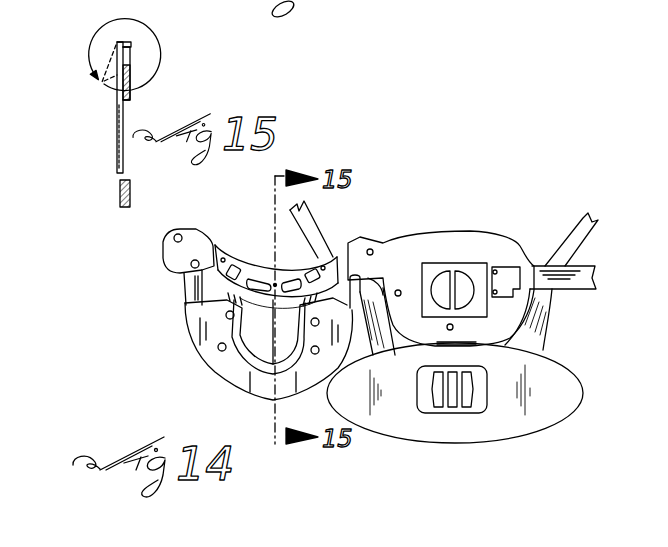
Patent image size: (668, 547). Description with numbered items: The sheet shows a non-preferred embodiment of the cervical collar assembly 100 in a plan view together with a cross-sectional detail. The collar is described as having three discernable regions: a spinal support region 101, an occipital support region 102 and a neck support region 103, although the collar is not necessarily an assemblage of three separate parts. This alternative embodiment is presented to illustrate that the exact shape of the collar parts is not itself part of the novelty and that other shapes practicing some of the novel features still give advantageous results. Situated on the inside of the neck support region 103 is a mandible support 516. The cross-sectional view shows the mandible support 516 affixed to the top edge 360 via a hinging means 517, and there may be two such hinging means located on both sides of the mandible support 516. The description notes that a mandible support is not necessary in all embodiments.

In FIG. 14, the ankle brace assembly 100 is at (377, 208).
In FIG. 14, the spinal support region 101 is at (512, 425).
In FIG. 14, the occipital support region 102 is at (470, 243).
In FIG. 14, the neck support region 103 is at (236, 266).
In FIG. 14, the top edge 360 is at (268, 266).
In FIG. 15, the mandible support 516 is at (130, 85).
In FIG. 15, the hinging means 517 is at (125, 44).